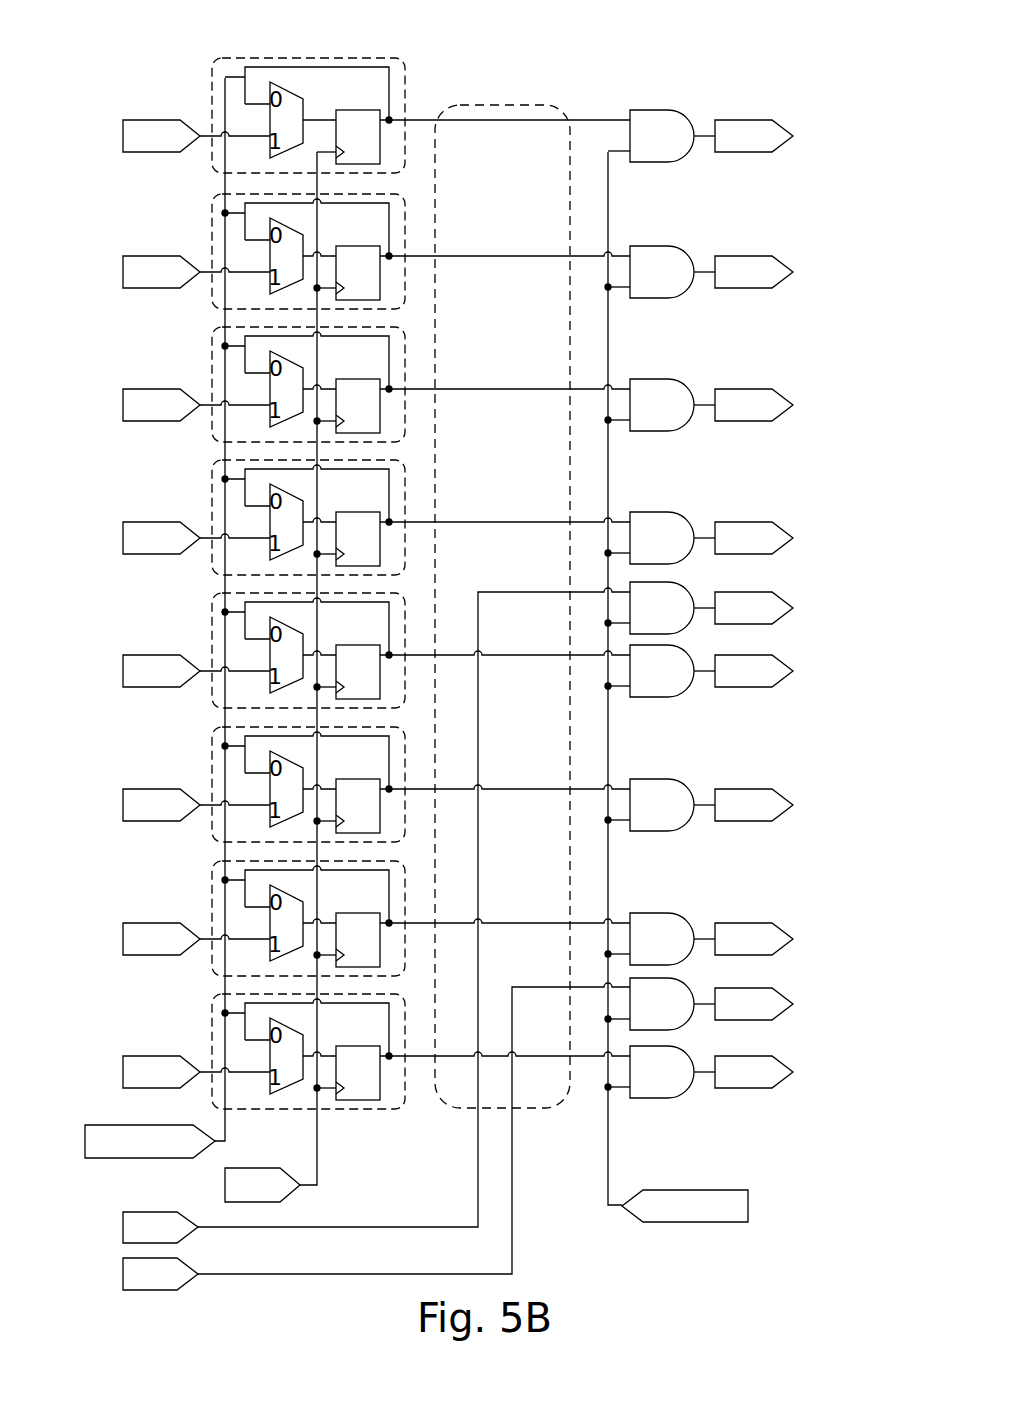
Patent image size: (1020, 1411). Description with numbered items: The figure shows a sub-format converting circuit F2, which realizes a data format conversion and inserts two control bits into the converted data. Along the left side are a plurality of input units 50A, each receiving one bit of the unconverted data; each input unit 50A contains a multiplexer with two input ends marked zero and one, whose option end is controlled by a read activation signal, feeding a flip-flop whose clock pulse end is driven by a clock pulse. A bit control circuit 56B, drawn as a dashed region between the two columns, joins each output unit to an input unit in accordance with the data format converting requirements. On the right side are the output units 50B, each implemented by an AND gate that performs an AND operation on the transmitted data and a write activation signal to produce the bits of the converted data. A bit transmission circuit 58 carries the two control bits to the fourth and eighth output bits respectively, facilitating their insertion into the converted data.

The sub-format converting circuit F2 is at (452, 64).
The input unit 50A is at (212, 75).
The bit control circuit 56B is at (485, 104).
The output unit 50B is at (637, 112).
The bit transmission circuit 58 is at (341, 1224).